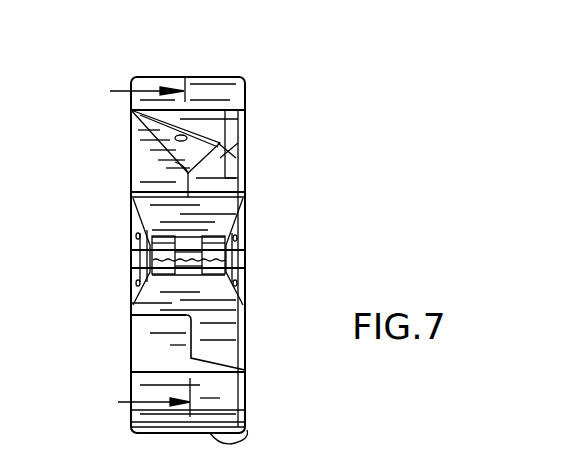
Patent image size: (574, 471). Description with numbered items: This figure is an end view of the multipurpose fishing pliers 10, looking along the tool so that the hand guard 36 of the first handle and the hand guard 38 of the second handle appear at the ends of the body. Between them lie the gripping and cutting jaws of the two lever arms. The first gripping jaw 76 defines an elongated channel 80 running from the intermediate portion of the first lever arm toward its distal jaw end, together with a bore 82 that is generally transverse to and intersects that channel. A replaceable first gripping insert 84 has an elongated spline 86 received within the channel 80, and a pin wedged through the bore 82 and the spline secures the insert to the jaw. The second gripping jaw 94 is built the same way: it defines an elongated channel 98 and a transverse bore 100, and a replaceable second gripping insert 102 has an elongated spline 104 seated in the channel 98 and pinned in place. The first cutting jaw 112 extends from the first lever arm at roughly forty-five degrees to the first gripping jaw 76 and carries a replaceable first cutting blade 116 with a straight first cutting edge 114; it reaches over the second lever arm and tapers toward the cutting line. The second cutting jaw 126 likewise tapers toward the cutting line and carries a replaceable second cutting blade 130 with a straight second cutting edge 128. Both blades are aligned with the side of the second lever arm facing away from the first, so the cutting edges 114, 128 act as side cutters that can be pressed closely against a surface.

The multipurpose fishing pliers 10 is at (265, 364).
The hand guard 36 is at (246, 440).
The hand guard 38 is at (160, 77).
The first gripping jaw 76 is at (150, 198).
The elongated channel 80 is at (137, 240).
The bore 82 is at (246, 234).
The first gripping insert 84 is at (138, 250).
The elongated spline 86 is at (185, 245).
The second gripping jaw 94 is at (165, 303).
The elongated channel 98 is at (133, 270).
The bore 100 is at (246, 283).
The second gripping insert 102 is at (246, 258).
The elongated spline 104 is at (137, 302).
The first cutting jaw 112 is at (131, 92).
The first cutting edge 114 is at (246, 146).
The first cutting blade 116 is at (246, 130).
The second cutting jaw 126 is at (246, 197).
The second cutting edge 128 is at (246, 148).
The second cutting blade 130 is at (246, 167).